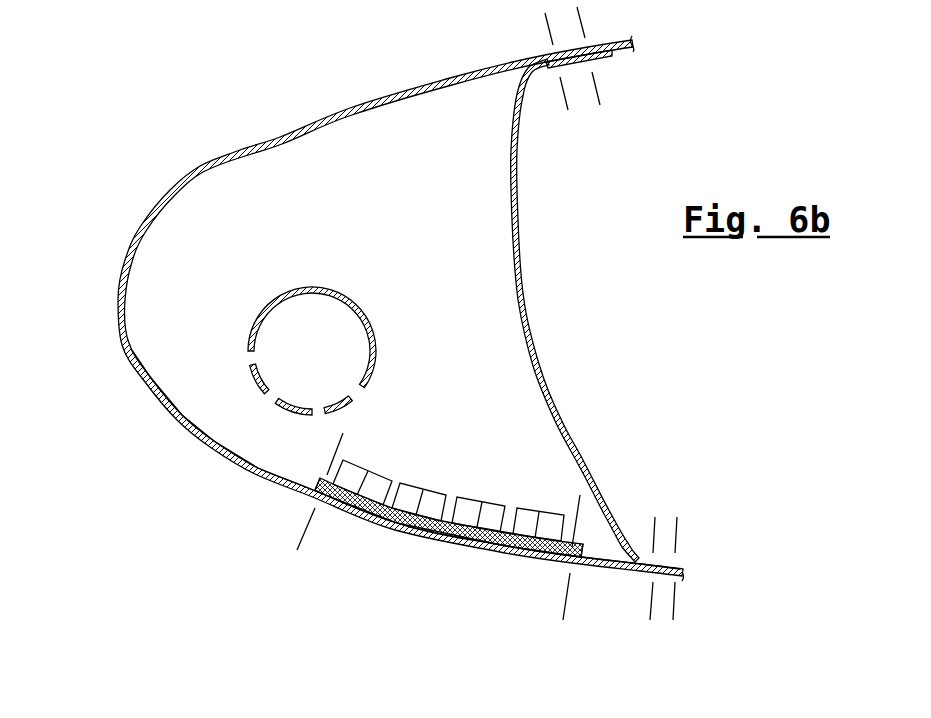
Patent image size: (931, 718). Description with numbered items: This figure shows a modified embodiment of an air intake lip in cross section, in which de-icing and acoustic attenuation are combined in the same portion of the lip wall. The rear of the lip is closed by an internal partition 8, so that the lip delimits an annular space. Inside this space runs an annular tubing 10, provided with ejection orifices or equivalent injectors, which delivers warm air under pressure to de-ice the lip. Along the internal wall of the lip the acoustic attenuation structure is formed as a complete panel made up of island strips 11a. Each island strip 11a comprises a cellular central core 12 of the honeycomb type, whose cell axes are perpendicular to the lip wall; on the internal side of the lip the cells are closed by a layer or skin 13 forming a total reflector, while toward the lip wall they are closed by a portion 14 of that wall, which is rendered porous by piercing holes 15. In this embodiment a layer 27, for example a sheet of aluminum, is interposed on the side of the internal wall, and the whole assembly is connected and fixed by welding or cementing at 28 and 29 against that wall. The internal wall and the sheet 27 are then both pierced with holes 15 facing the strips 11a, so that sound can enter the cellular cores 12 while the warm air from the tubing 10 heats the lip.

The internal partition 8 is at (535, 345).
The annular tubing 10 is at (280, 291).
The island strip 11a is at (525, 497).
The cellular central core 12 is at (337, 485).
The reflector 13 is at (353, 475).
The portion of the wall 14 is at (456, 530).
The holes 15 is at (421, 520).
The layer 27 is at (570, 537).
The welding or cementing location 28 is at (303, 503).
The welding or cementing location 29 is at (575, 572).